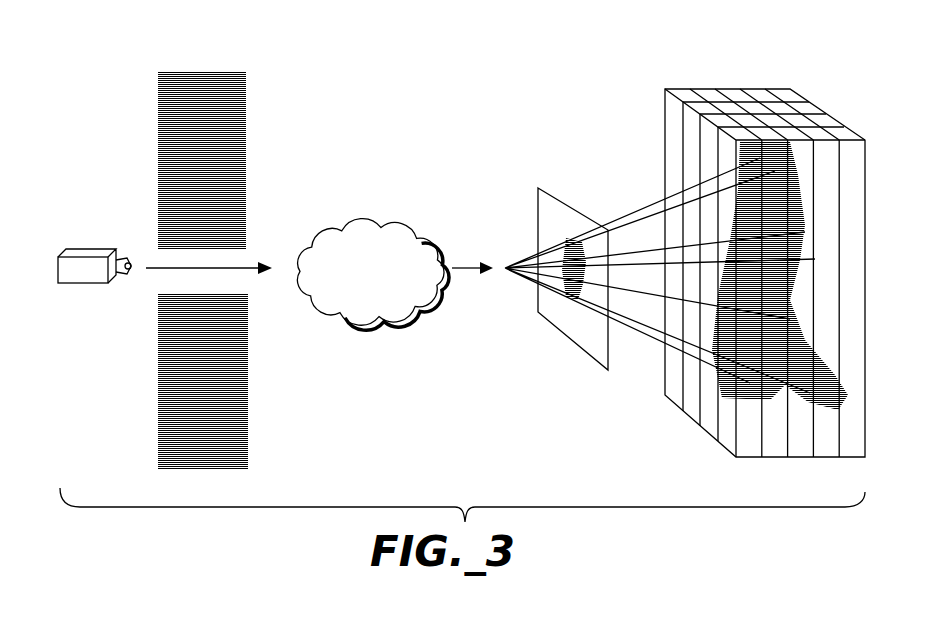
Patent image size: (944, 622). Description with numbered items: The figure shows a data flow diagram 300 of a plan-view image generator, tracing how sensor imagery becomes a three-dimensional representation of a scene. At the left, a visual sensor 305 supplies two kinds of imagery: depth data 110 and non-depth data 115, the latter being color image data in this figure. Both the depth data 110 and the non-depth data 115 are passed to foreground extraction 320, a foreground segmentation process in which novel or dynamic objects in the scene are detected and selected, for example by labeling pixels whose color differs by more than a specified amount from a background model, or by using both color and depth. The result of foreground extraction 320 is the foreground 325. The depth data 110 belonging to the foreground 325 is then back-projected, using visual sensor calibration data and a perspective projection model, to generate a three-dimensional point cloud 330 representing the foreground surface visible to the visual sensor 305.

The data flow diagram 300 is at (155, 45).
The non-depth data 115 is at (157, 151).
The depth data 110 is at (157, 361).
The visual sensor 305 is at (73, 250).
The foreground extraction 320 is at (378, 223).
The foreground 325 is at (562, 204).
The 3D point cloud 330 is at (683, 90).